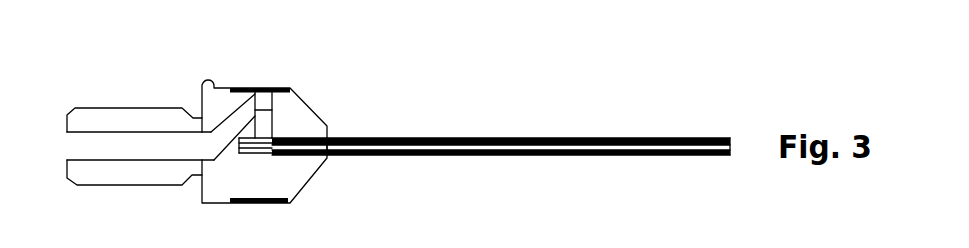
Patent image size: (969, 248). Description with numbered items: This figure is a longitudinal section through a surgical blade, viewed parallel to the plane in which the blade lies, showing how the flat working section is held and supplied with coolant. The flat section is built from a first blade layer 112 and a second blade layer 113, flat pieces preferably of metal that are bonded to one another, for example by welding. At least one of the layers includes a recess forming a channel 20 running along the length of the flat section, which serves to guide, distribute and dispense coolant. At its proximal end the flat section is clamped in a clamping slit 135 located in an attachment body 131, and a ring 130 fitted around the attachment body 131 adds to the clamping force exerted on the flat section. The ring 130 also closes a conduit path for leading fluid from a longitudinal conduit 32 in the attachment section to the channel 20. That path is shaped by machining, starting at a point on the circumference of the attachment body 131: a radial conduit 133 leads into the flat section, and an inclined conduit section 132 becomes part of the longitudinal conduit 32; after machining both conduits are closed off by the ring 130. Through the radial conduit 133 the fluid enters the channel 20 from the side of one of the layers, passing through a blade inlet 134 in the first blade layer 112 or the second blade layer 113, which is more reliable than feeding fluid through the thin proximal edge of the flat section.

The channel 20 is at (501, 150).
The longitudinal conduit 32 is at (157, 145).
The first blade layer 112 is at (582, 138).
The second blade layer 113 is at (580, 155).
The ring 130 is at (270, 88).
The attachment body 131 is at (300, 173).
The inclined conduit section 132 is at (235, 120).
The radial conduit 133 is at (266, 114).
The blade inlet 134 is at (272, 138).
The clamping slit 135 is at (330, 137).